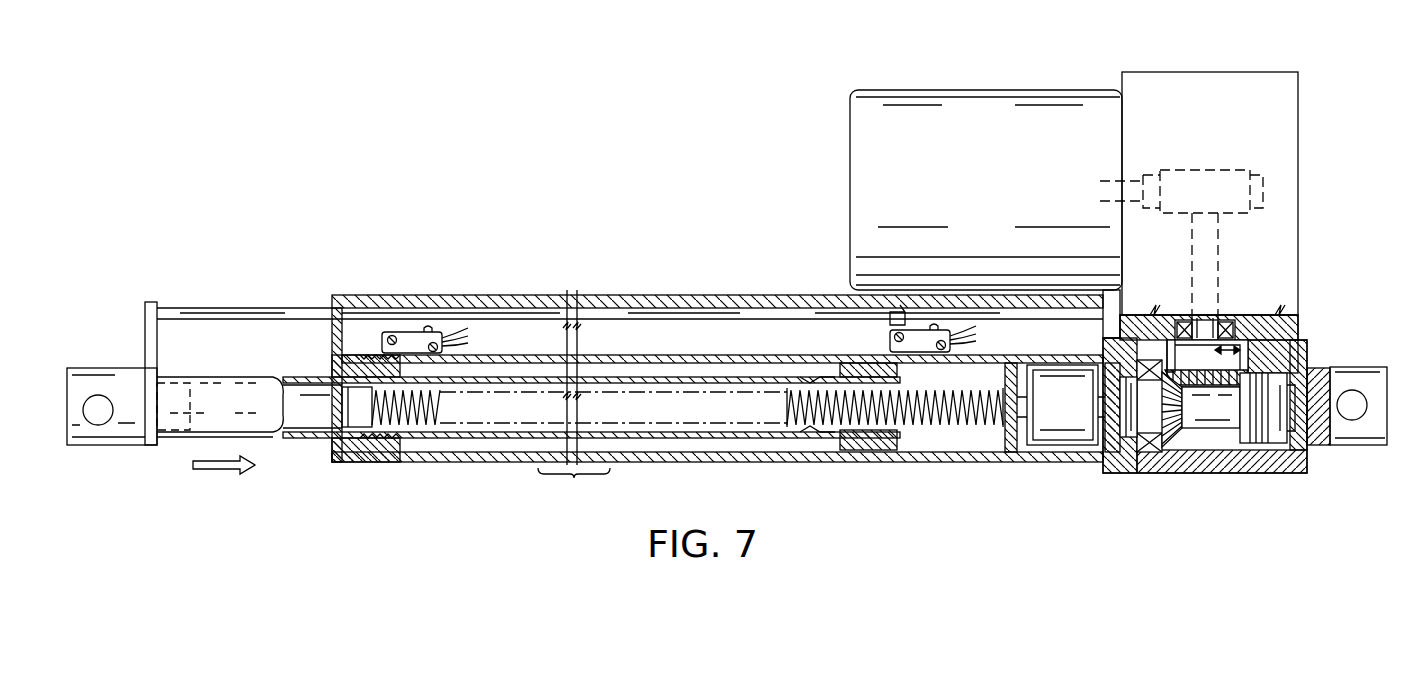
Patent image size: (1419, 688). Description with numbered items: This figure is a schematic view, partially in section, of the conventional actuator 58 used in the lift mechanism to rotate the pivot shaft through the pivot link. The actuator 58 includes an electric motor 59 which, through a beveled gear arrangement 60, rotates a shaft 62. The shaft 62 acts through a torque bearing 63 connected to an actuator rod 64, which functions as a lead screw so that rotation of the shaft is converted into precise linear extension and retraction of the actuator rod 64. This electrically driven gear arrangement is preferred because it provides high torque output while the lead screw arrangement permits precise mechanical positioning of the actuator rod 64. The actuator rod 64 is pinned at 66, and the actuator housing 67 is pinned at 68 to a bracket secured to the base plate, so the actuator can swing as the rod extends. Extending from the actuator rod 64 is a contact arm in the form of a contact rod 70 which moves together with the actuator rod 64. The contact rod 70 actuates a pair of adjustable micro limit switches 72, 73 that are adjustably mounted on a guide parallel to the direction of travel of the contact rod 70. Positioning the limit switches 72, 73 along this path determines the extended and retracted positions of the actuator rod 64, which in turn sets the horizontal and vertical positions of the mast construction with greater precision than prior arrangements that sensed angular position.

The actuator 58 is at (482, 464).
The electric motor 59 is at (965, 105).
The beveled gear arrangement 60 is at (1176, 434).
The shaft 62 is at (977, 425).
The torque bearing 63 is at (1060, 446).
The actuator rod 64 is at (262, 440).
The pin connection of actuator rod 66 is at (96, 420).
The actuator housing 67 is at (1277, 474).
The pin connection of actuator housing 68 is at (1356, 398).
The contact rod 70 is at (296, 312).
The adjustable micro limit switch 72 is at (412, 336).
The adjustable micro limit switch 73 is at (945, 330).